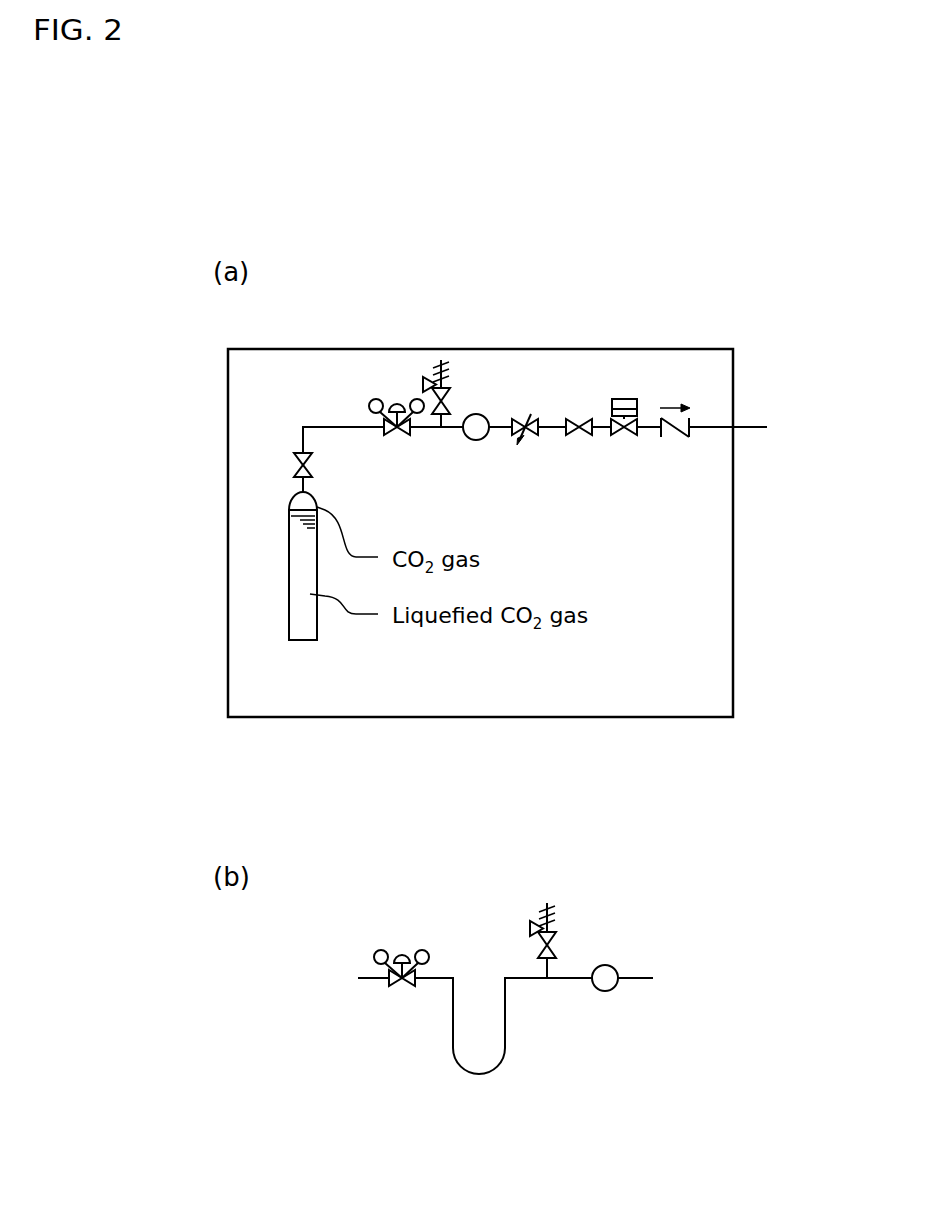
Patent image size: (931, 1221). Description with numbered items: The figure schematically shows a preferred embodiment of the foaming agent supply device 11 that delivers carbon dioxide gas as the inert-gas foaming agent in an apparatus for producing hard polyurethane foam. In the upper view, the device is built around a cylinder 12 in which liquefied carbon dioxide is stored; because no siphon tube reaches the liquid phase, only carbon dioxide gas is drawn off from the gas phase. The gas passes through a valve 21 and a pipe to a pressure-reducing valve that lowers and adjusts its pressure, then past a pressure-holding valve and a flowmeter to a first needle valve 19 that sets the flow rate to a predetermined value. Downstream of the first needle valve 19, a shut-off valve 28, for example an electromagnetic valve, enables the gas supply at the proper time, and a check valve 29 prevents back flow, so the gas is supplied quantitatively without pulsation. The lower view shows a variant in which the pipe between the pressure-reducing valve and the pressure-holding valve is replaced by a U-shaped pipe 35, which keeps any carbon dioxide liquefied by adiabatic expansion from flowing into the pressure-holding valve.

The foaming agent supply device 11 is at (745, 379).
The cylinder 12 is at (305, 633).
The first needle valve 19 is at (531, 441).
The valve 21 is at (300, 456).
The shut-off valve 28 is at (630, 398).
The check valve 29 is at (686, 441).
The U-shaped pipe 35 is at (452, 1043).